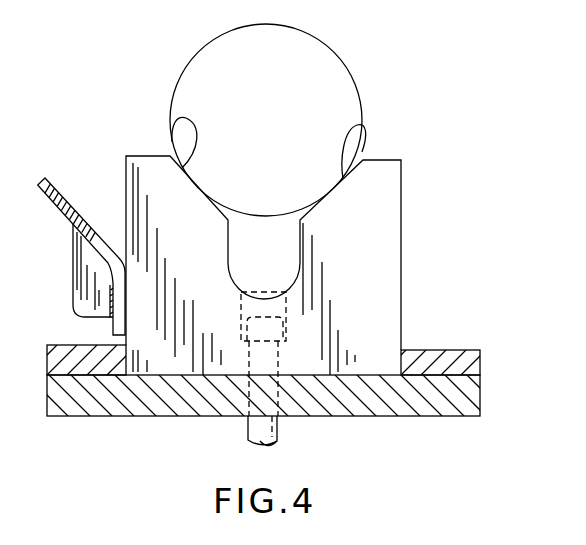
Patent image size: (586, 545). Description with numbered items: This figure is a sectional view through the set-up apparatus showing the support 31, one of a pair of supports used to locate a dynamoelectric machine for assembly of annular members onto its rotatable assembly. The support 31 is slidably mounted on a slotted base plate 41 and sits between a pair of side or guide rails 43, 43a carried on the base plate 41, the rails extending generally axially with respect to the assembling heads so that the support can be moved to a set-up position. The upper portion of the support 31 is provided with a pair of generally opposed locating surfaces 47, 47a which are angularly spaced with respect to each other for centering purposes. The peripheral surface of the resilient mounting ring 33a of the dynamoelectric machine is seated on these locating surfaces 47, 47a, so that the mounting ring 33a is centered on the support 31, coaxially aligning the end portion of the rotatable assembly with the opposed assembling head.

The support 31 is at (420, 170).
The resilient mounting ring 33a is at (342, 56).
The slotted base plate 41 is at (396, 412).
The guide rail 43 is at (448, 353).
The guide rail 43a is at (65, 343).
The locating surface 47 is at (358, 125).
The locating surface 47a is at (180, 118).